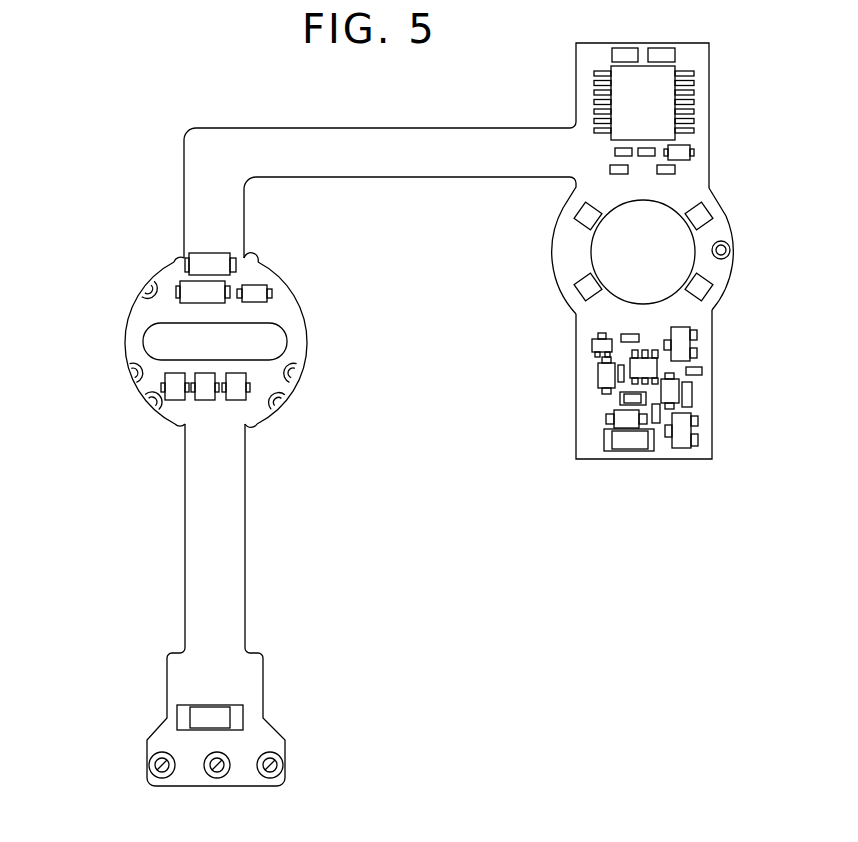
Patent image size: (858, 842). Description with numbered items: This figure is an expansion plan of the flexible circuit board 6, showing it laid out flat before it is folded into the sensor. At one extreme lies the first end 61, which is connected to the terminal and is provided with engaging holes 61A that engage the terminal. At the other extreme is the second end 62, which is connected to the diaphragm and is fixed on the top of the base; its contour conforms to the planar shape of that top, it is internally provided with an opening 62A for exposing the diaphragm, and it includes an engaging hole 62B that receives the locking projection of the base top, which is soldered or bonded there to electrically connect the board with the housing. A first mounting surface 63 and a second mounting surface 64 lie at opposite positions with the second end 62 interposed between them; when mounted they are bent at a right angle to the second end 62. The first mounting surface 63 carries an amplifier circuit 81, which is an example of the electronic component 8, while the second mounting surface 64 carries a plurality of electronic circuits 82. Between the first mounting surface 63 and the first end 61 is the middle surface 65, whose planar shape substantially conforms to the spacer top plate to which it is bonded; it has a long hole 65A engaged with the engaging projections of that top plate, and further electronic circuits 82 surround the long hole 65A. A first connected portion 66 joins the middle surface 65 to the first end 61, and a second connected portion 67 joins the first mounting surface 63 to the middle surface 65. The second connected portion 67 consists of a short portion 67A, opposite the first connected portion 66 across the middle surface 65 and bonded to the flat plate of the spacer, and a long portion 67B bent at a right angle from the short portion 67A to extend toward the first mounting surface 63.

The flexible circuit board 6 is at (304, 439).
The electronic component 8 is at (653, 280).
The first end 61 is at (220, 742).
The engaging holes 61A is at (150, 752).
The second end 62 is at (653, 248).
The opening 62A is at (608, 255).
The engaging hole 62B is at (721, 241).
The first mounting surface 63 is at (680, 111).
The second mounting surface 64 is at (698, 452).
The middle surface 65 is at (203, 340).
The long hole 65A is at (148, 337).
The first connected portion 66 is at (233, 532).
The second connected portion 67 is at (380, 190).
The short portion 67A is at (237, 212).
The long portion 67B is at (330, 178).
The amplifier circuit 81 is at (665, 75).
The electronic circuits 82 is at (210, 260).